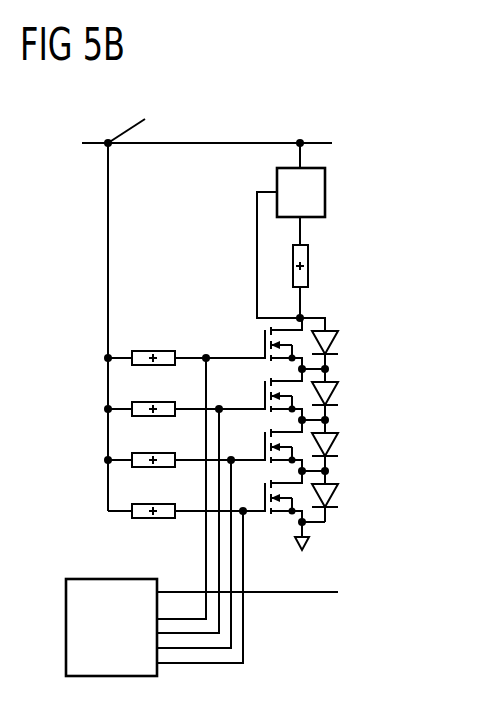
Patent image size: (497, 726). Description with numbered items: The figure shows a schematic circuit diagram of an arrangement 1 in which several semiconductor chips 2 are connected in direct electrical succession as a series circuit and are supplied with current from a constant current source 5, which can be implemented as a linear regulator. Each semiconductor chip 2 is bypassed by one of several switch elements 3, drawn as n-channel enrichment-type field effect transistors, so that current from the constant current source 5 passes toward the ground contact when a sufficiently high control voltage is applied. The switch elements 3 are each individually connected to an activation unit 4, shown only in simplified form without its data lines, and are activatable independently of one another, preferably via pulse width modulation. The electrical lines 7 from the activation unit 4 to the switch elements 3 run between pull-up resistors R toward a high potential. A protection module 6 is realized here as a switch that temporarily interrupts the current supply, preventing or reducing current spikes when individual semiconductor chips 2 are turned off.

The arrangement 1 is at (362, 148).
The semiconductor chips 2 is at (330, 327).
The switch elements 3 is at (263, 347).
The activation unit 4 is at (64, 626).
The constant current source 5 is at (329, 192).
The protection module 6 is at (128, 130).
The electrical lines 7 is at (108, 252).
The resistors R is at (157, 519).